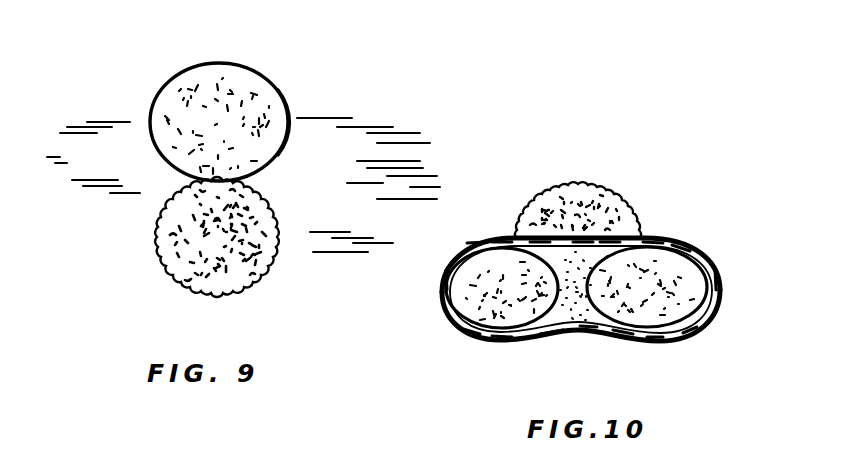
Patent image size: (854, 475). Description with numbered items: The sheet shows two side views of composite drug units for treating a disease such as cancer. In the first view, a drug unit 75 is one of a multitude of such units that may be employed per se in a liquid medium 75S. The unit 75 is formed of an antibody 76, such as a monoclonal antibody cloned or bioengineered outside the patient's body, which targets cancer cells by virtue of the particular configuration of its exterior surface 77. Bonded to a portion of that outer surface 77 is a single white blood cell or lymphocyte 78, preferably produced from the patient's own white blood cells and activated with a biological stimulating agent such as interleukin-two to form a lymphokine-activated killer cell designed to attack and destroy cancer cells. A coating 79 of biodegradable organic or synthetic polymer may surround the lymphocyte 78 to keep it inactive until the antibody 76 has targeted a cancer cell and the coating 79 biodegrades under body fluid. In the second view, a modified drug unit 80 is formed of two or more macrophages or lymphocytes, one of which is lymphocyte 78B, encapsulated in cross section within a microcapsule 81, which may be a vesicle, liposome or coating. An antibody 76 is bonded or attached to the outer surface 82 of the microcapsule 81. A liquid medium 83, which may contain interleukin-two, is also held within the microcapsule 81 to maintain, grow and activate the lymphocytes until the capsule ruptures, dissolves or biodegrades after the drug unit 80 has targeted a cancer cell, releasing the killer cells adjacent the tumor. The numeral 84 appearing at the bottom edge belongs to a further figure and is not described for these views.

In FIG. 9, the drug unit 75 is at (146, 66).
In FIG. 9, the liquid medium 75S is at (132, 180).
In FIG. 9, the antibody 76 is at (160, 220).
In FIG. 10, the antibody 76 is at (553, 197).
In FIG. 9, the exterior surface 77 is at (273, 207).
In FIG. 9, the lymphocyte 78 is at (245, 85).
In FIG. 9, the coating 79 is at (286, 150).
In FIG. 10, the drug unit 80 is at (638, 175).
In FIG. 10, the microcapsule 81 is at (667, 237).
In FIG. 10, the outer surface 82 is at (688, 338).
In FIG. 10, the lymphocyte 78B is at (680, 290).
In FIG. 10, the liquid medium 83 is at (573, 320).
In FIG. 9, the element of next figure 84 is at (150, 474).